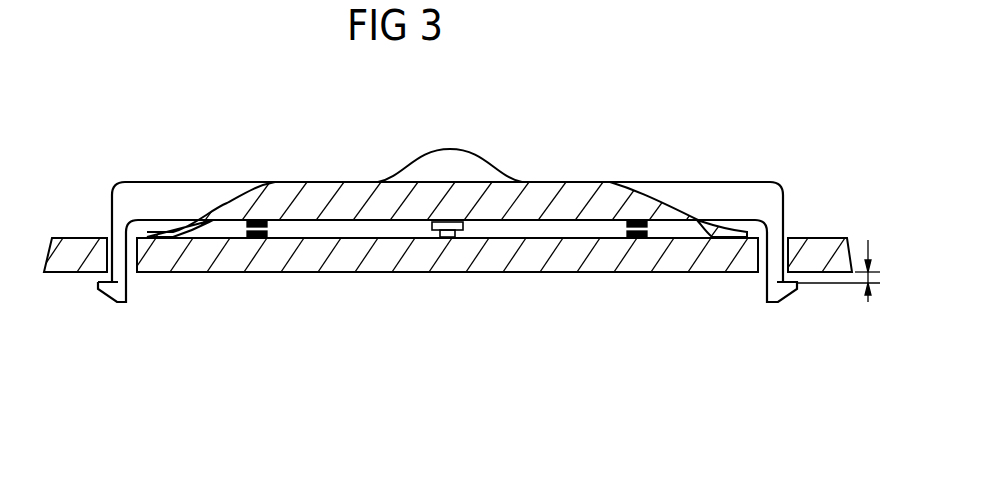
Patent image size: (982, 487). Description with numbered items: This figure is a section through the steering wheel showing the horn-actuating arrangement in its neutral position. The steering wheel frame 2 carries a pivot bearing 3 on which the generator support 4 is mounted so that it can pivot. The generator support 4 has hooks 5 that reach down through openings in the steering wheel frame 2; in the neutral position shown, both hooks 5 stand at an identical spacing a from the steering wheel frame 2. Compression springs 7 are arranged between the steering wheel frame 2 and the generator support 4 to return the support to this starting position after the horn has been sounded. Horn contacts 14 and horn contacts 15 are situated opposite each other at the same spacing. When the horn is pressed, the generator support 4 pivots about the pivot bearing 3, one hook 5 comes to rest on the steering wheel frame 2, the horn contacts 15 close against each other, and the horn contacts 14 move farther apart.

The steering wheel frame 2 is at (307, 258).
The pivot bearing 3 is at (448, 239).
The generator support 4 is at (168, 198).
The hooks 5 is at (118, 282).
The compression springs 7 is at (173, 238).
The horn contacts 14 is at (253, 252).
The horn contacts 15 is at (636, 252).
The spacing a is at (846, 271).